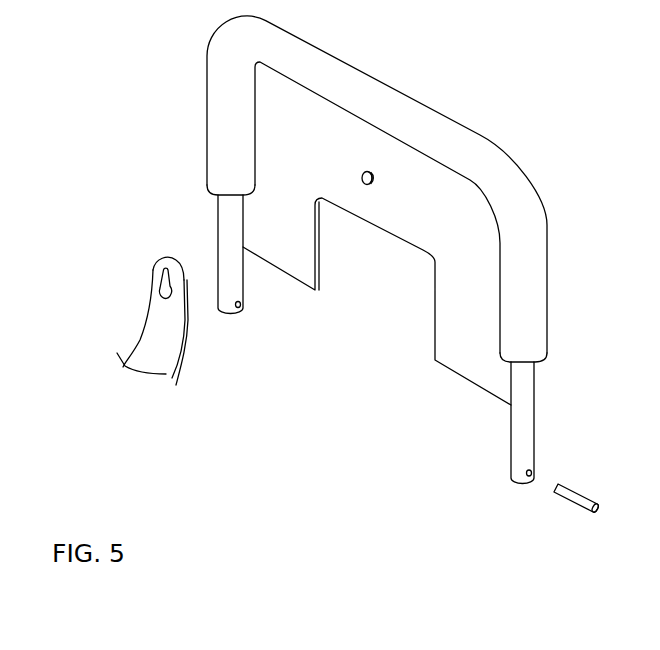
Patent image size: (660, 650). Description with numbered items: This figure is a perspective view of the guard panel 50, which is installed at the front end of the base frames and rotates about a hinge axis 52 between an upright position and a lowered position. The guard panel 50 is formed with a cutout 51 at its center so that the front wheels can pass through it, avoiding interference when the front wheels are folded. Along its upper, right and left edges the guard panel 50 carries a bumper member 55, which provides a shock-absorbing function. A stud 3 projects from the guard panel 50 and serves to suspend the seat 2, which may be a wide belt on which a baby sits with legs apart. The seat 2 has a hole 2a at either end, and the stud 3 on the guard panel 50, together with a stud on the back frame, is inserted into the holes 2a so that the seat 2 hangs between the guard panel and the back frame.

The guard panel 50 is at (421, 250).
The bumper member 55 is at (532, 270).
The cutout 51 is at (424, 253).
The hinge axis 52 is at (576, 504).
The stud 3 is at (369, 186).
The seat 2 is at (140, 305).
The hole 2a is at (156, 283).